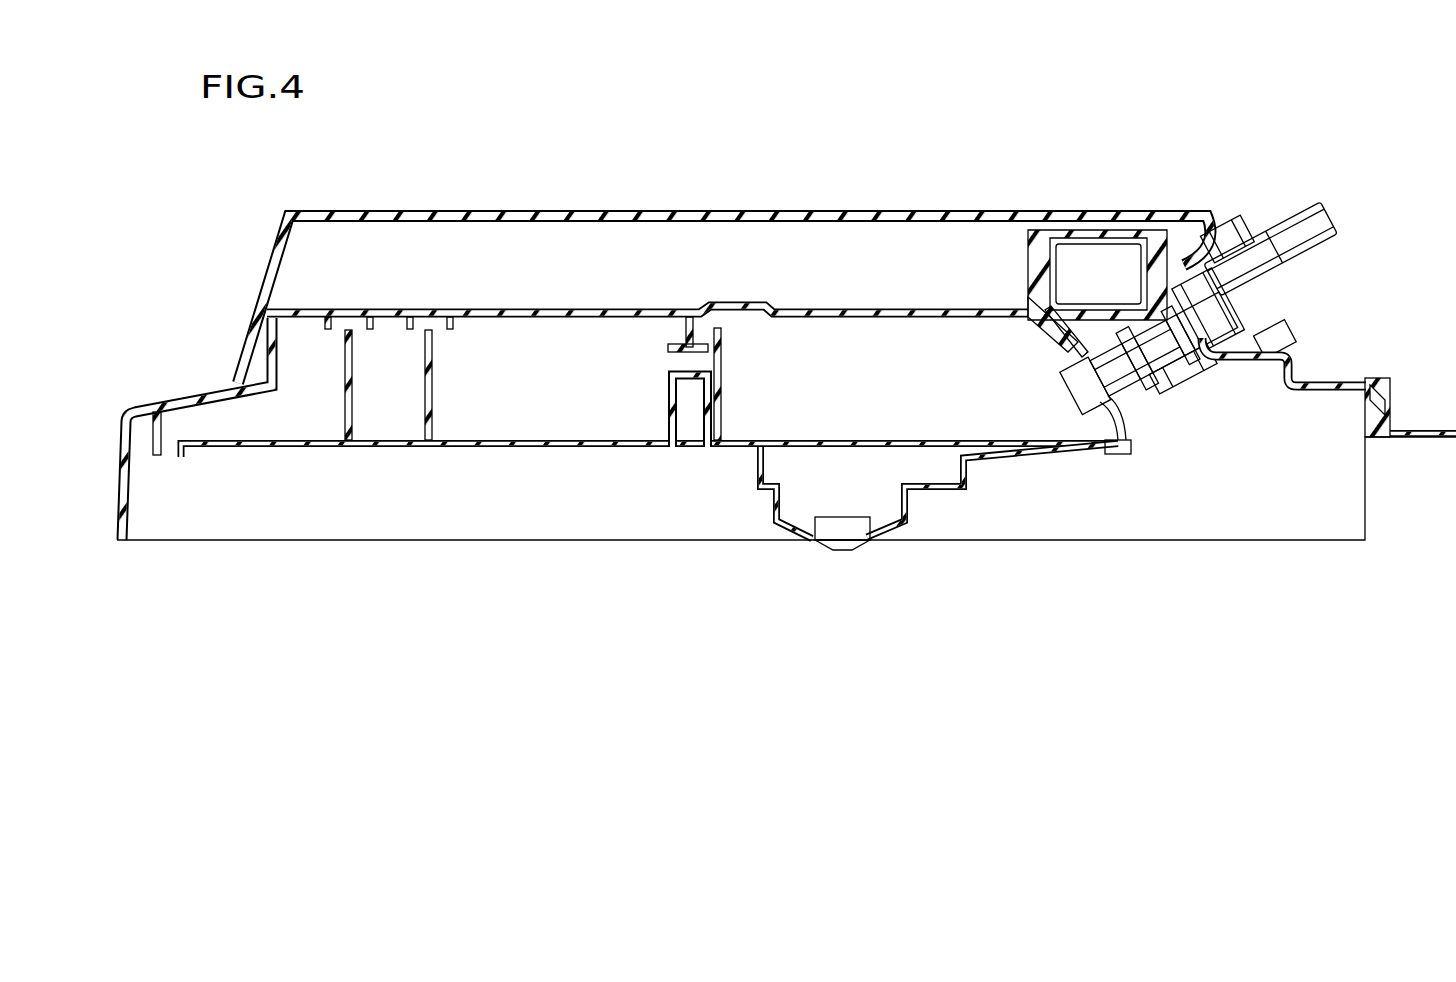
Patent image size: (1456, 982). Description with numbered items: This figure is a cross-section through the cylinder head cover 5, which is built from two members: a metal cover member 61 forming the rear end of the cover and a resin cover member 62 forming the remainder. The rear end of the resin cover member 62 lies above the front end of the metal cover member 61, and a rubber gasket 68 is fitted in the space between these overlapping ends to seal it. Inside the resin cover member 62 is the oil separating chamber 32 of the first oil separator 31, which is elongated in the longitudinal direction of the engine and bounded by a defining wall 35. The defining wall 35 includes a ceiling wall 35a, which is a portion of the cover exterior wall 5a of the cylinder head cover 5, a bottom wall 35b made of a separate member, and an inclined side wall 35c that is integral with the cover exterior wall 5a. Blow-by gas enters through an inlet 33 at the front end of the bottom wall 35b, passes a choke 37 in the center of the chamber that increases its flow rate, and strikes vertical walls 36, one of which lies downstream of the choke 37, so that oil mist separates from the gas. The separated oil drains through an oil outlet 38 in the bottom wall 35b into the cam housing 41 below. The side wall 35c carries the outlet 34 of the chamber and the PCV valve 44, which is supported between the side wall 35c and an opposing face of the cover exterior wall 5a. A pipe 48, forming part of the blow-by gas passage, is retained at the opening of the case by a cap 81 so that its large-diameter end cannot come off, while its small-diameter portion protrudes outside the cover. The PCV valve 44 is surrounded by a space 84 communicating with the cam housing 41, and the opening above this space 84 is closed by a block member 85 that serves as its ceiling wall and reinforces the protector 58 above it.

The cylinder head cover 5 is at (1329, 350).
The cover exterior wall 5a is at (647, 272).
The first oil separator 31 is at (543, 340).
The oil separating chamber 32 is at (520, 410).
The inlet 33 is at (171, 461).
The outlet 34 is at (1076, 383).
The defining wall 35 is at (560, 450).
The ceiling wall 35a is at (828, 308).
The bottom wall 35b is at (631, 450).
The side wall 35c is at (1050, 340).
The vertical walls 36 is at (424, 383).
The choke 37 is at (665, 361).
The oil outlet 38 is at (840, 553).
The cam housing 41 is at (1165, 520).
The PCV valve 44 is at (1181, 373).
The pipe 48 is at (1296, 215).
The protector 58 is at (748, 209).
The metal cover member 61 is at (1432, 428).
The resin cover member 62 is at (1336, 378).
The rubber gasket 68 is at (1389, 397).
The cap 81 is at (1233, 236).
The space 84 is at (1130, 304).
The block member 85 is at (1088, 229).